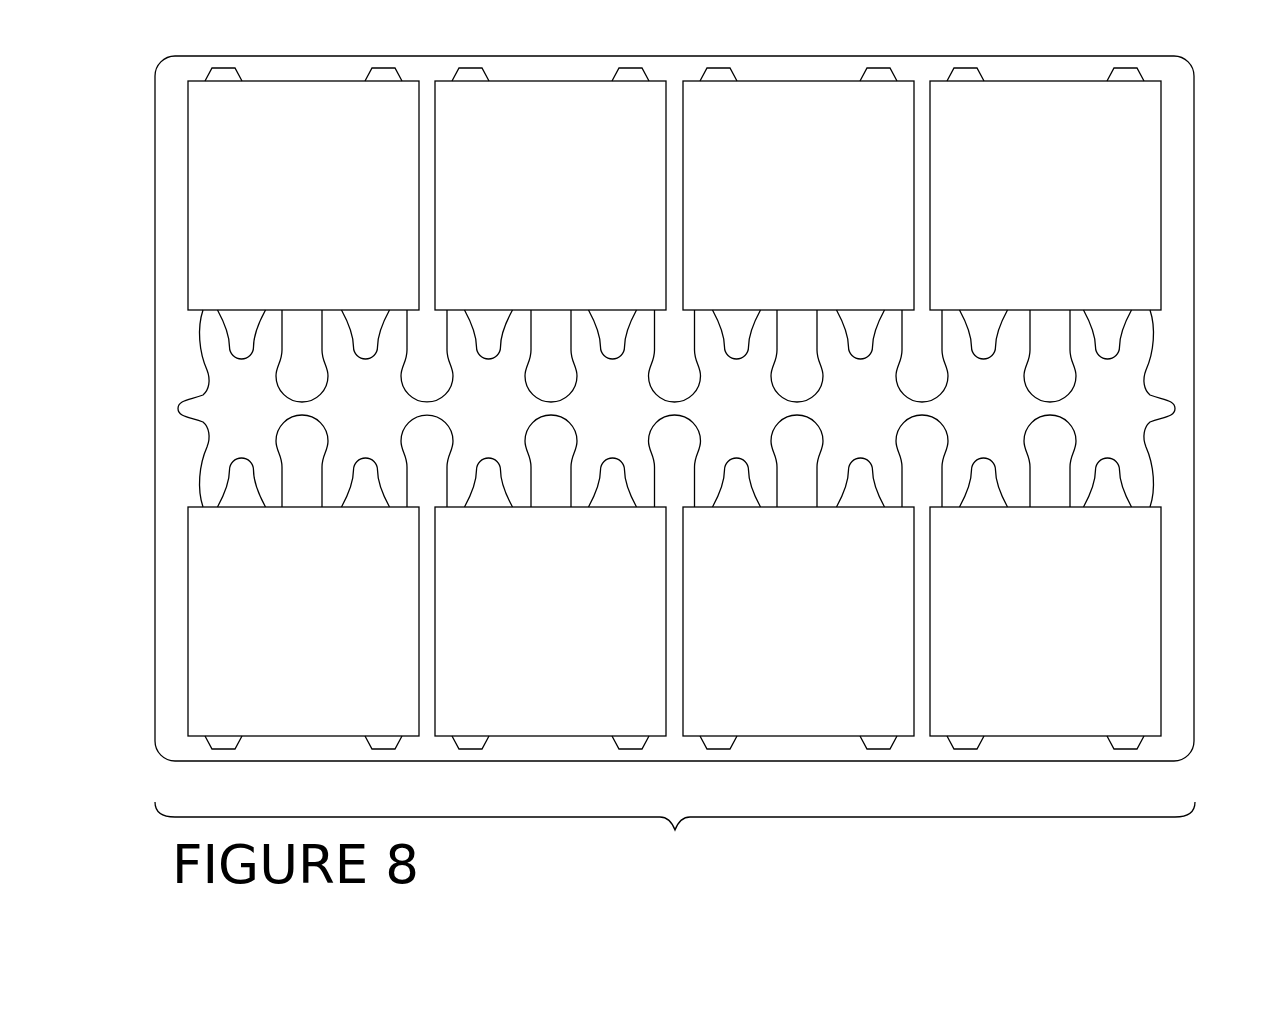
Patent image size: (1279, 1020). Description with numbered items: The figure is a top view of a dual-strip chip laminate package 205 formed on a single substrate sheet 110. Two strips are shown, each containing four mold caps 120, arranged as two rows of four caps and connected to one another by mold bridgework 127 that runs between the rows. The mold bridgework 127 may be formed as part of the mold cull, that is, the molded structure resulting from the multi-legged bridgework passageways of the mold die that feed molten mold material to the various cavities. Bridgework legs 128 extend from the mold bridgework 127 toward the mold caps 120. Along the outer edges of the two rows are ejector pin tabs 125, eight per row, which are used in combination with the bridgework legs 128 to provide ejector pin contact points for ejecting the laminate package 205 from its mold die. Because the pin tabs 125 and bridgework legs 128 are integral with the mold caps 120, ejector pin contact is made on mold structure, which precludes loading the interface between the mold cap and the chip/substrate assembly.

The substrate sheet 110 is at (1195, 628).
The mold cap 120 is at (1028, 81).
The ejector pin tab 125 is at (1118, 68).
The mold bridgework 127 is at (1158, 390).
The bridgework leg 128 is at (1155, 332).
The laminate package 205 is at (675, 833).